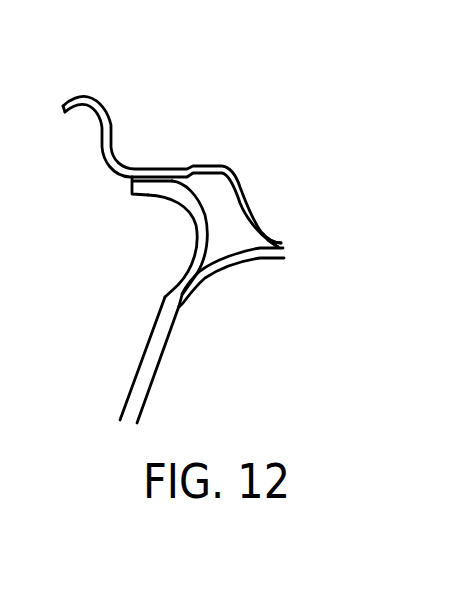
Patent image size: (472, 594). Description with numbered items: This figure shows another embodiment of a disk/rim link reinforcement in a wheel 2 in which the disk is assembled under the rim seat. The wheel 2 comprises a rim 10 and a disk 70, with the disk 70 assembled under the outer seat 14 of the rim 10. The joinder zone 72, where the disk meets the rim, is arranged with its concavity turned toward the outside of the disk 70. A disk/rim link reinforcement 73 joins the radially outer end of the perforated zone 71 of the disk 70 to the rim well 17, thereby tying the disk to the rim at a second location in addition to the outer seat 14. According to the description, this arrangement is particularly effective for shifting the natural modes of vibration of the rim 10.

The wheel 2 is at (306, 350).
The rim 10 is at (270, 148).
The outer seat 14 is at (153, 171).
The rim well 17 is at (279, 242).
The disk 70 is at (140, 354).
The perforated zone 71 is at (147, 369).
The joinder zone 72 is at (147, 194).
The disk/rim link reinforcement 73 is at (230, 267).